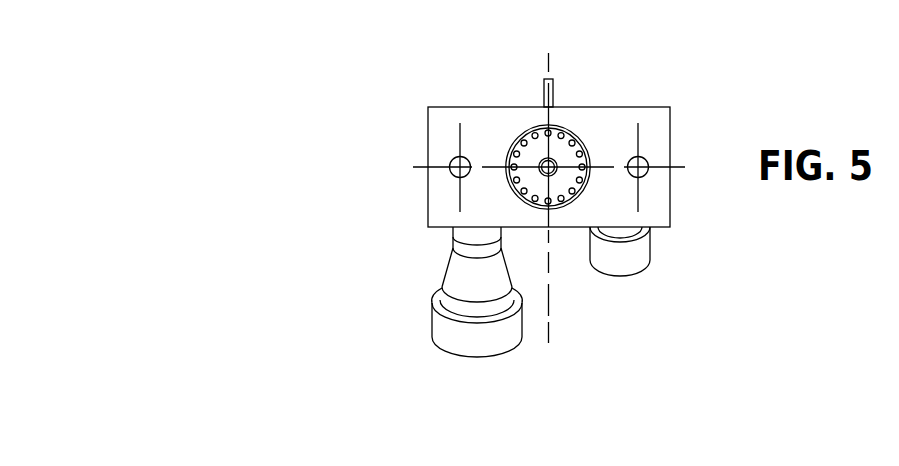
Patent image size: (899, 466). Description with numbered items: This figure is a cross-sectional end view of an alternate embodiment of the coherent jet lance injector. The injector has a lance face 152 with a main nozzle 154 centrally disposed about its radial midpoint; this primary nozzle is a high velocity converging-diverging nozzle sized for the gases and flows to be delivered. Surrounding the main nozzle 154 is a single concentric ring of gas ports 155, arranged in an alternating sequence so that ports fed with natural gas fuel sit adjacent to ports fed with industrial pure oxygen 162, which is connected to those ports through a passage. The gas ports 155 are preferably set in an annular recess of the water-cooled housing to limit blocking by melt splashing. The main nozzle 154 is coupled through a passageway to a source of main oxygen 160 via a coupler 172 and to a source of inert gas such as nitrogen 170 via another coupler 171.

The lance face 152 is at (576, 180).
The main nozzle 154 is at (593, 193).
The gas ports 155 is at (515, 152).
The main oxygen 160 is at (485, 375).
The oxygen 162 is at (340, 465).
The nitrogen 170 is at (596, 322).
The coupler 171 is at (597, 260).
The coupler 172 is at (457, 277).